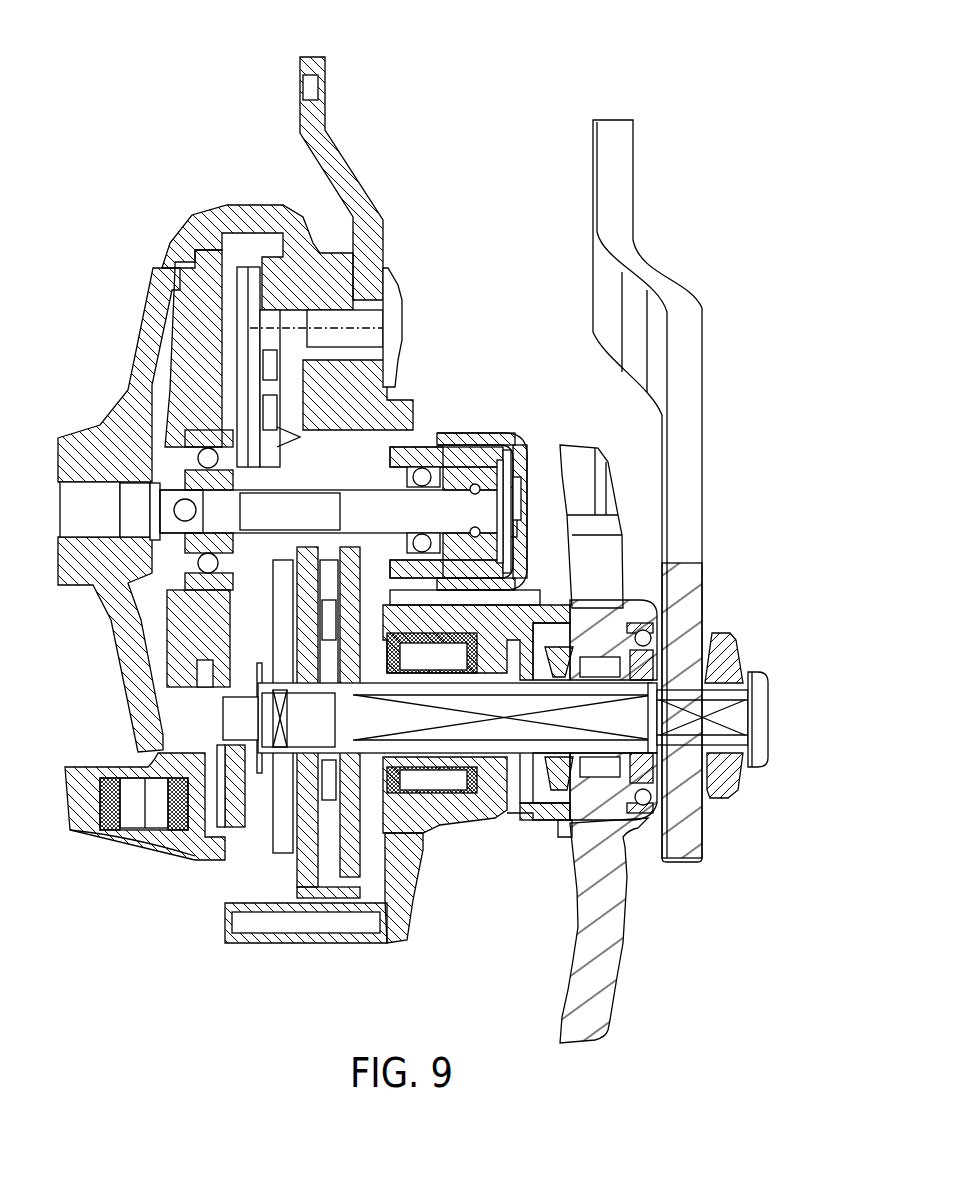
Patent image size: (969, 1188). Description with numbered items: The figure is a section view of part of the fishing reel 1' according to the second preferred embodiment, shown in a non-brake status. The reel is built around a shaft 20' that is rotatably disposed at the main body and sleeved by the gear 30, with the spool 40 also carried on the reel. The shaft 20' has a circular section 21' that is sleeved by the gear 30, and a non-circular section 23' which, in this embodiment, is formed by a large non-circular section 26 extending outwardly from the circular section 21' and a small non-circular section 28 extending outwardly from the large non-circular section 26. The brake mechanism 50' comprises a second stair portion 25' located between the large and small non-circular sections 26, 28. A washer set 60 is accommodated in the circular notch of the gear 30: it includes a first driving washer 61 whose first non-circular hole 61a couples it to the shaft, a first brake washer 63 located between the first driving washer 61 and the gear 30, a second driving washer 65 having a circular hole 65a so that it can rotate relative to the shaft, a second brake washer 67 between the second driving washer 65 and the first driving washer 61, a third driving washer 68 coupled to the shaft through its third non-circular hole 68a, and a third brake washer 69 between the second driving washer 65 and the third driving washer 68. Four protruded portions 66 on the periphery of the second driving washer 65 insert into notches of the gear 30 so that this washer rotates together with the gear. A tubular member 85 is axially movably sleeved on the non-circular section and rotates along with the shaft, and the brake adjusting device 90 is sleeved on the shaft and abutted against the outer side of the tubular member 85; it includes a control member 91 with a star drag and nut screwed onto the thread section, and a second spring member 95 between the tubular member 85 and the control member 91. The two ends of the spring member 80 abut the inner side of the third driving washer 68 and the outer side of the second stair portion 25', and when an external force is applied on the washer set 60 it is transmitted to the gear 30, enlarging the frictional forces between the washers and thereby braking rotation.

The fishing reel 1' is at (727, 56).
The shaft 20' is at (709, 682).
The circular section 21' is at (178, 706).
The non-circular section 23' is at (343, 721).
The second stair portion 25' is at (162, 601).
The large non-circular section 26 is at (333, 740).
The small non-circular section 28 is at (405, 720).
The gear 30 is at (300, 878).
The spool 40 is at (98, 443).
The brake mechanism 50' is at (673, 491).
The washer set 60 is at (577, 353).
The first driving washer 61 is at (410, 450).
The first non-circular hole 61a is at (325, 890).
The first brake washer 63 is at (395, 455).
The second driving washer 65 is at (425, 530).
The circular hole 65a is at (397, 845).
The protruded portions 66 is at (355, 880).
The second brake washer 67 is at (425, 478).
The third driving washer 68 is at (522, 460).
The third non-circular hole 68a is at (415, 605).
The third brake washer 69 is at (497, 470).
The spring member 80 is at (437, 810).
The tubular member 85 is at (488, 762).
The brake adjusting device 90 is at (583, 470).
The control member 91 is at (602, 967).
The second spring member 95 is at (550, 790).